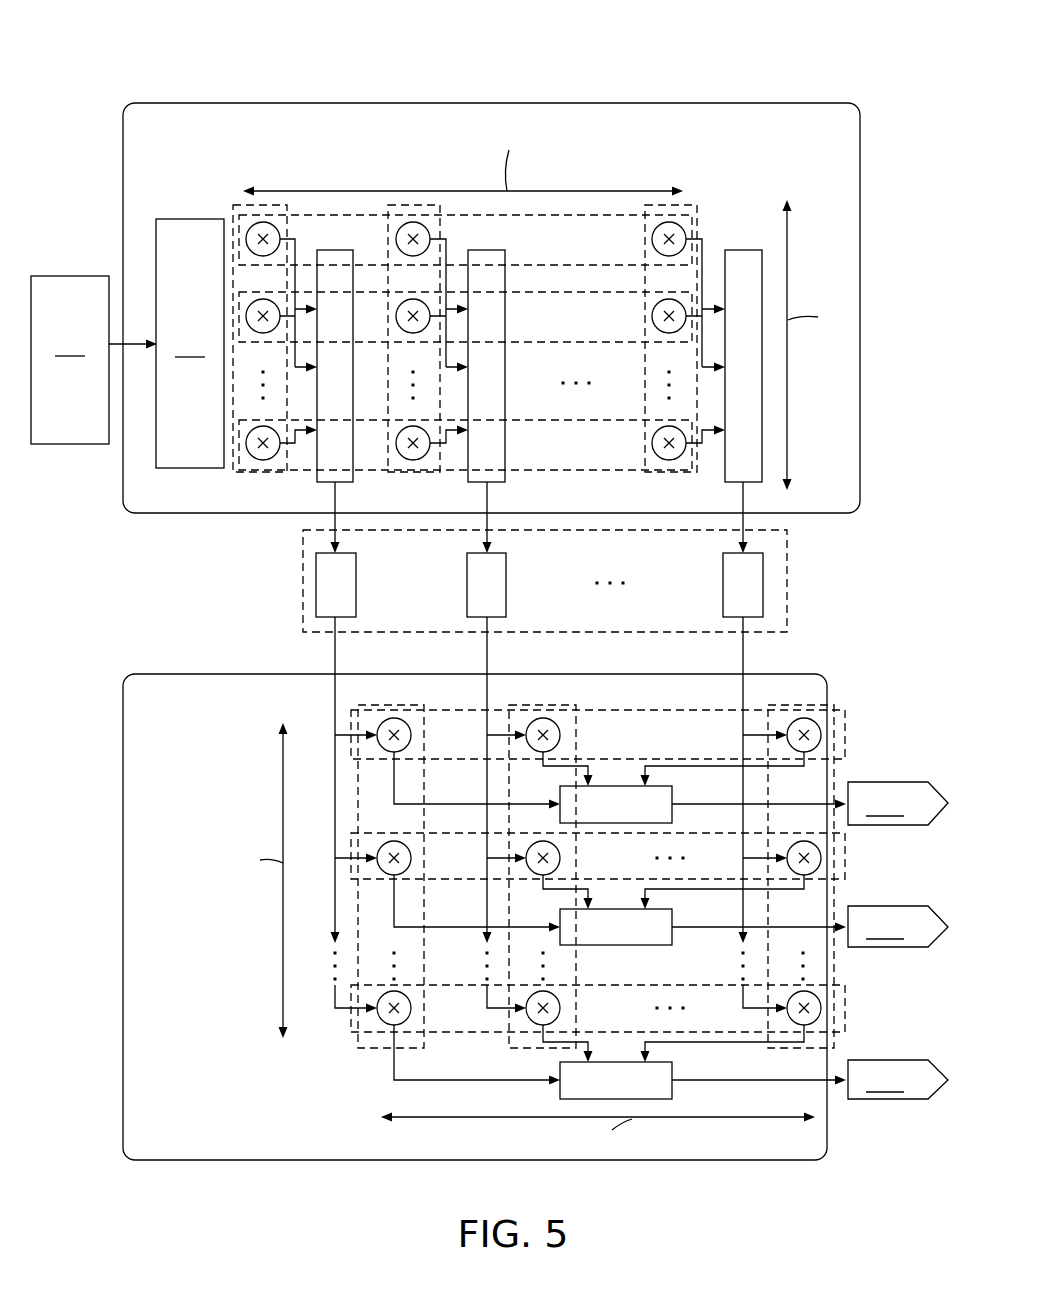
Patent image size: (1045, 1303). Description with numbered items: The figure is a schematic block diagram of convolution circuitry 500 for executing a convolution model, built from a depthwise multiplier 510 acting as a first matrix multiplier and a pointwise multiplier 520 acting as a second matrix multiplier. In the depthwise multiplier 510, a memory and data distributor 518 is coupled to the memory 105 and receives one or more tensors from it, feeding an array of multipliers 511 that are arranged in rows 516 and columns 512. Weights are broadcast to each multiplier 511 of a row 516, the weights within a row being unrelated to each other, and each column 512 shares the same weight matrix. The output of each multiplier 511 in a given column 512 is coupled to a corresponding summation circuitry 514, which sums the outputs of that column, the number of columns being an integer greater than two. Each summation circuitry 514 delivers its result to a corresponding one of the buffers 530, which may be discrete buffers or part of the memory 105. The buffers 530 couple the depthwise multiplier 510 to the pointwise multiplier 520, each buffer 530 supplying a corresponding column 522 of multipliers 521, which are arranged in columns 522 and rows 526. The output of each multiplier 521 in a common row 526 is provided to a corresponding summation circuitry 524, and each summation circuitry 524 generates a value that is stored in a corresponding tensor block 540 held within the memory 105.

The convolution circuitry 500 is at (140, 39).
The memory 105 is at (94, 360).
The depthwise multiplier 510 is at (861, 241).
The memory and data distributor 518 is at (190, 343).
The multiplier 511 is at (397, 237).
The column 512 is at (283, 206).
The row 516 is at (622, 215).
The summation circuitry 514 is at (353, 473).
The buffer 530 is at (356, 580).
The pointwise multiplier 520 is at (123, 853).
The multiplier 521 is at (560, 735).
The column 522 is at (900, 973).
The row 526 is at (848, 740).
The summation circuitry 524 is at (668, 790).
The tensor block 540 is at (898, 940).